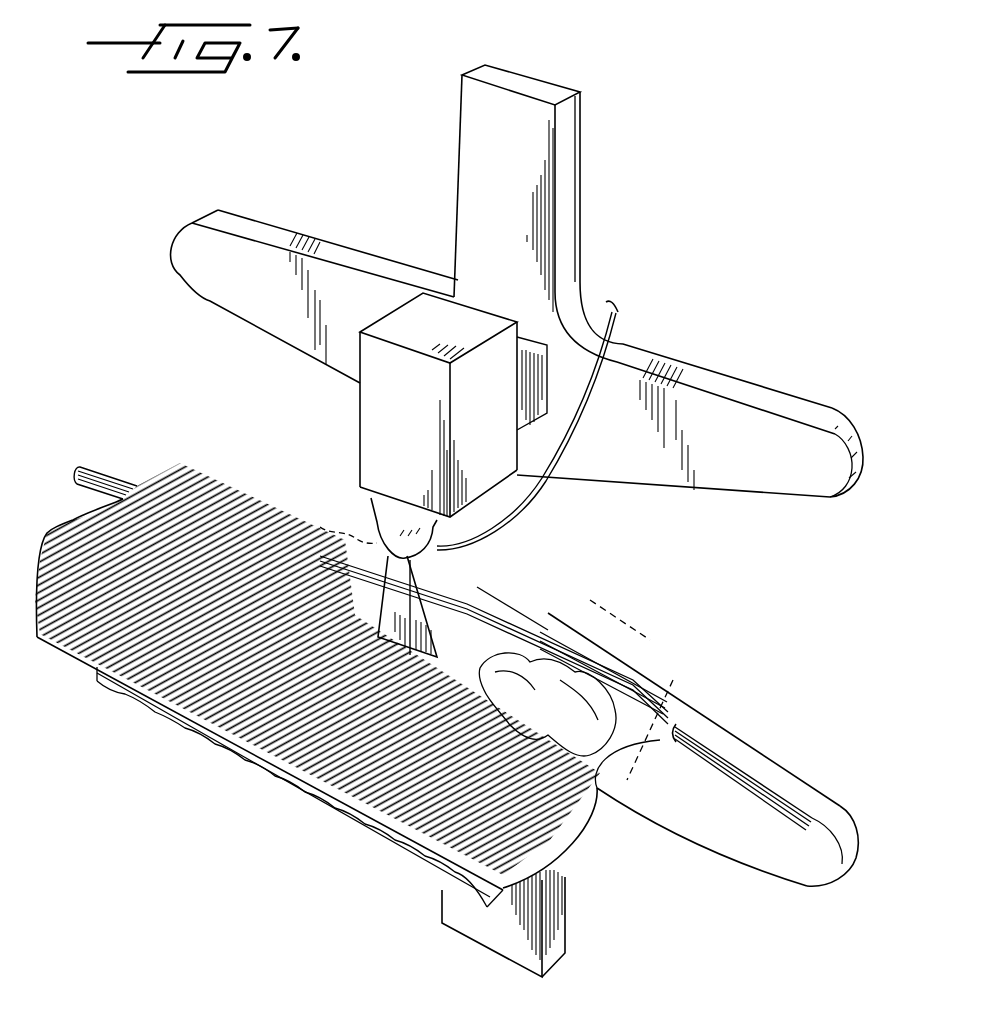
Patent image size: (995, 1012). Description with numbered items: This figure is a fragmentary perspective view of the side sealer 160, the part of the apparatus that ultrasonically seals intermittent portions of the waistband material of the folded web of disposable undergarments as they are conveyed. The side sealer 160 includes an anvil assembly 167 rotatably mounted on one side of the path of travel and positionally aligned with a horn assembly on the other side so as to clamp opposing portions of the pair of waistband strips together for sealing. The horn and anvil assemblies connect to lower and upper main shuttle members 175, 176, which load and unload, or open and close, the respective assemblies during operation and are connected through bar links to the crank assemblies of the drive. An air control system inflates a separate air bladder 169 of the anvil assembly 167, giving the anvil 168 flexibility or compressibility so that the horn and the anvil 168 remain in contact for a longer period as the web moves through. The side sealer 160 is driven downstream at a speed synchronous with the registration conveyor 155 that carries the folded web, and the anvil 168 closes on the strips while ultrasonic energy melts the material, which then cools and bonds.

The side sealer 160 is at (850, 58).
The lower main shuttle member 175 is at (578, 224).
The anvil assembly 167 is at (491, 500).
The anvil 168 is at (428, 582).
The air bladder 169 is at (377, 527).
The registration conveyor 155 is at (552, 790).
The upper main shuttle member 176 is at (558, 935).